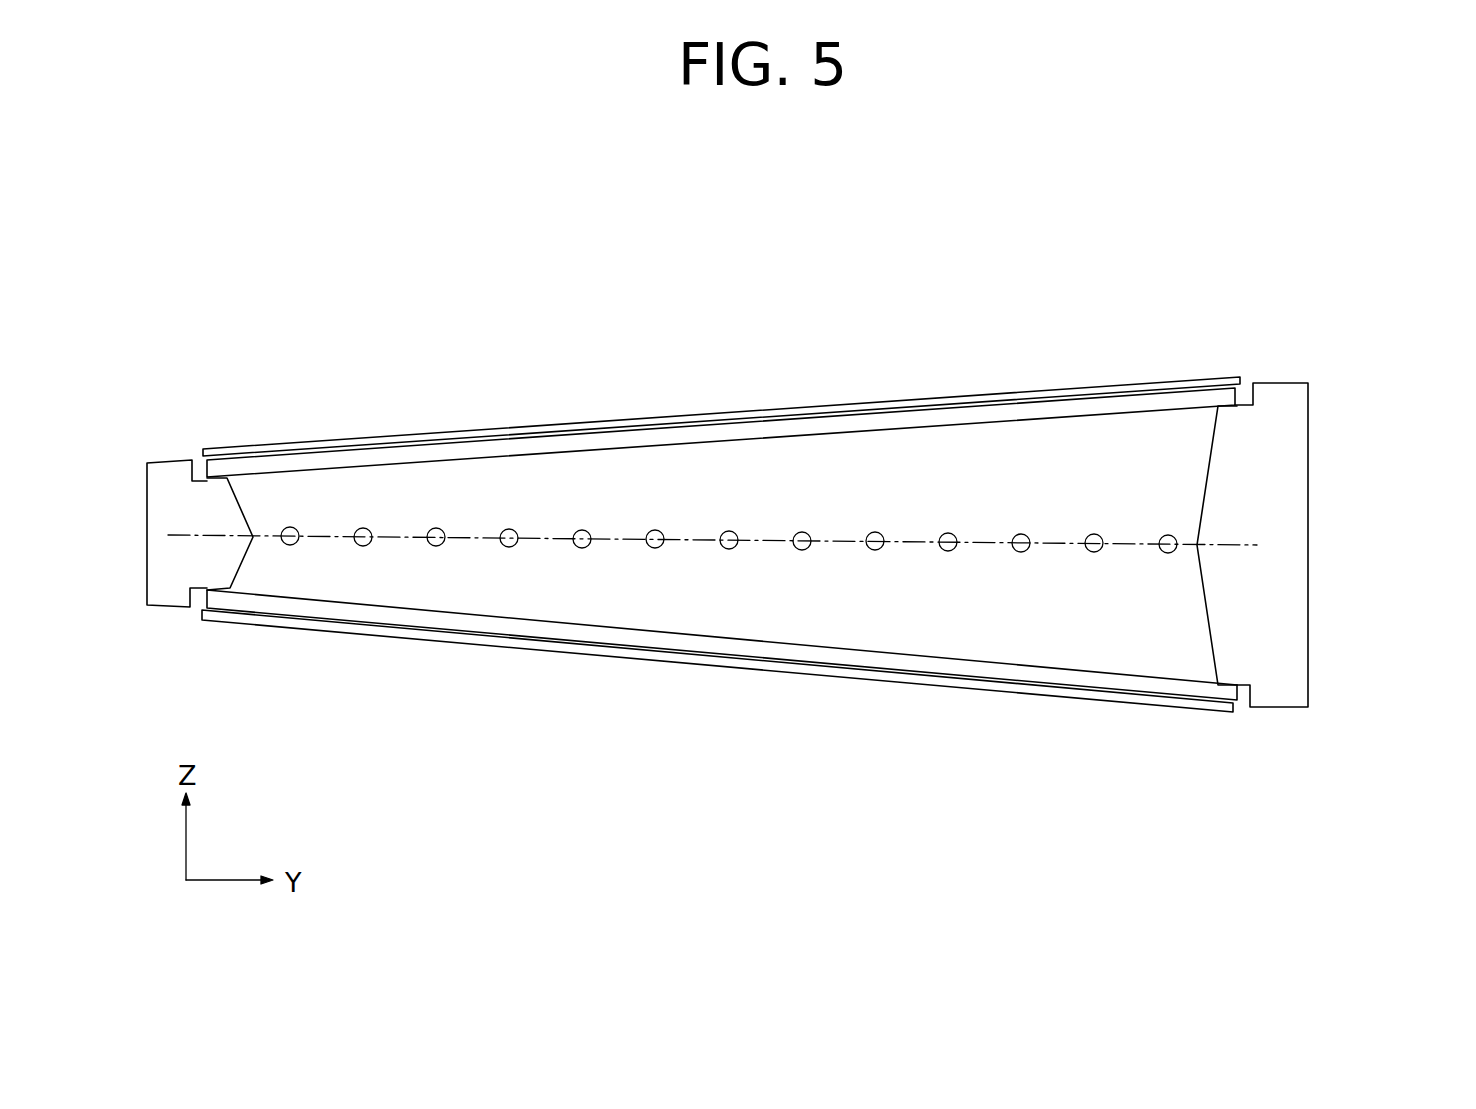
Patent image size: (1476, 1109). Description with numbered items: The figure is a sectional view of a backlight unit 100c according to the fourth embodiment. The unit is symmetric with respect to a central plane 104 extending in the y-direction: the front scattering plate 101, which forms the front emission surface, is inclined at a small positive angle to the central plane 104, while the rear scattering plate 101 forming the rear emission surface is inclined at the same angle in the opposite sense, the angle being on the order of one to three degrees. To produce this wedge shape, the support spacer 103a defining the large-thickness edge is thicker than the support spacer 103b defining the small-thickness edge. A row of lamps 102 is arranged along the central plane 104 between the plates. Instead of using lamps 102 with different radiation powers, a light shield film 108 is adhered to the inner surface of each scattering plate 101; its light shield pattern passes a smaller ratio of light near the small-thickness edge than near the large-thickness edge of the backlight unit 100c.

The backlight unit 100c is at (1290, 205).
The scattering plate 101 is at (1062, 389).
The lamp 102 is at (290, 527).
The support spacer 103a is at (1310, 421).
The support spacer 103b is at (146, 503).
The central plane 104 is at (1238, 551).
The light shield film 108 is at (868, 431).